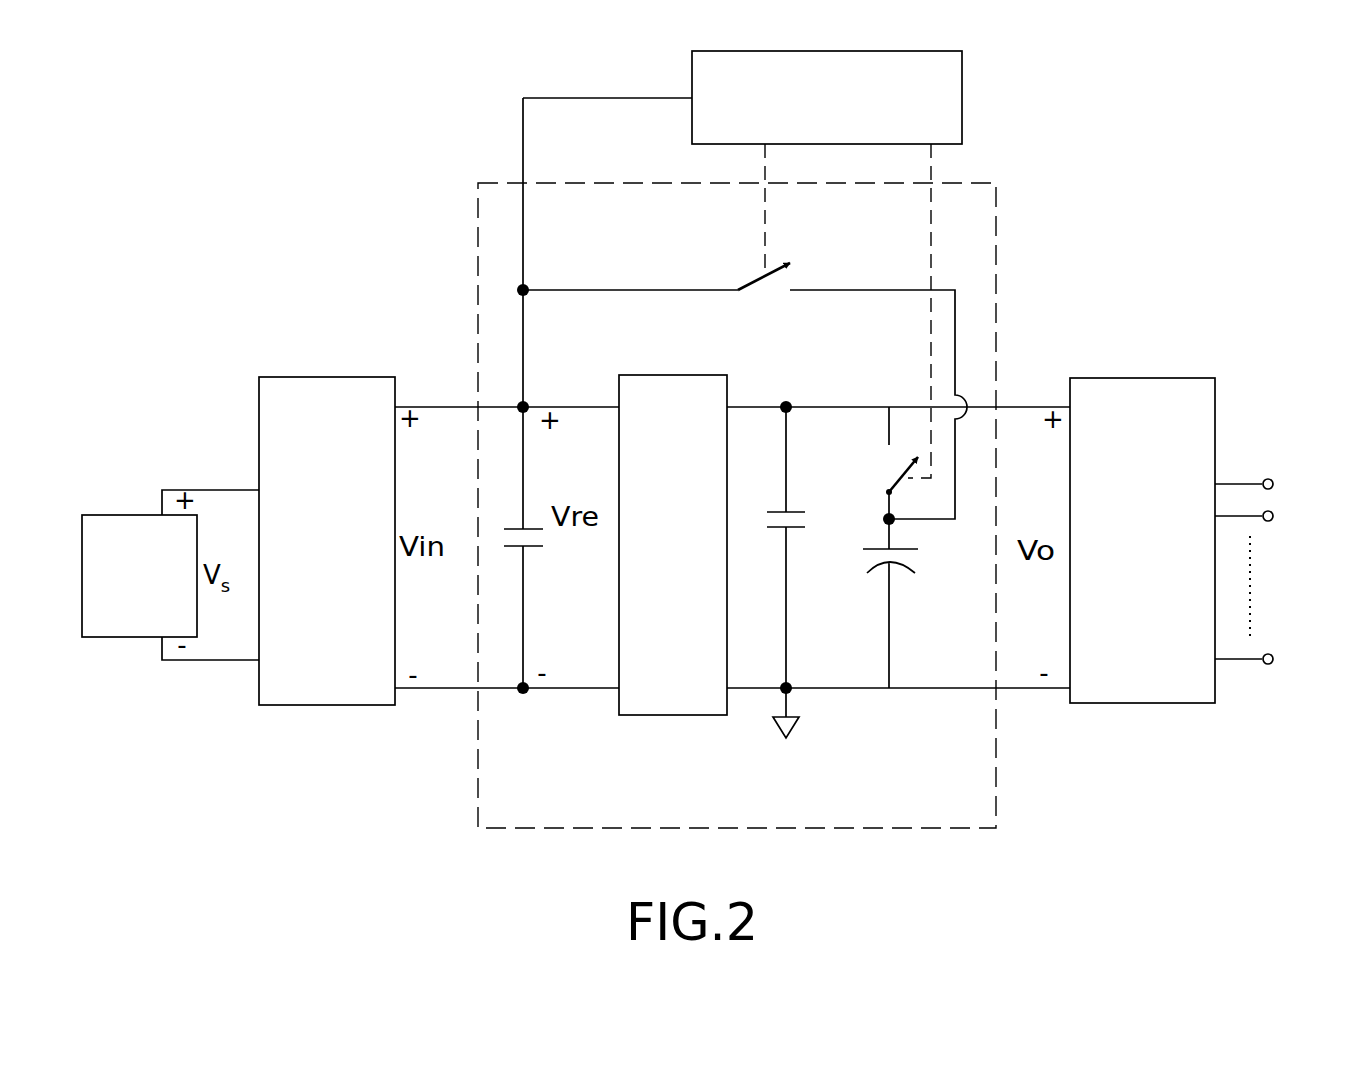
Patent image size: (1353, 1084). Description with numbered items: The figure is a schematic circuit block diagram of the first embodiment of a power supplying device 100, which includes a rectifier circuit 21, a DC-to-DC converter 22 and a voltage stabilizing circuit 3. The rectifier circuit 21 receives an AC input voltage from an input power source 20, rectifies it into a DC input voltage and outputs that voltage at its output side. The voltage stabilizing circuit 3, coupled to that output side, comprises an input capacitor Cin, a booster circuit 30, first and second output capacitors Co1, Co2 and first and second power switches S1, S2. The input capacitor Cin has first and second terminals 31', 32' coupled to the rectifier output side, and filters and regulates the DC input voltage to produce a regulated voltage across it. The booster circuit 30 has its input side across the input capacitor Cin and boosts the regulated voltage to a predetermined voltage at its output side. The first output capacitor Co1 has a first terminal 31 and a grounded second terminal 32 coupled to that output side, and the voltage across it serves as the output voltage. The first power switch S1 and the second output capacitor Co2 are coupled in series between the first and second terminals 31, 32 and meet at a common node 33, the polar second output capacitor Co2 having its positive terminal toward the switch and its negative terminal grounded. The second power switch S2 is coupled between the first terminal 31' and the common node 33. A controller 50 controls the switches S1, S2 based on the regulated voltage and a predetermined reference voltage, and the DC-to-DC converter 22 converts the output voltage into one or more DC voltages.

The power supplying device 100 is at (1139, 281).
The voltage stabilizing circuit 3 is at (999, 210).
The controller 50 is at (843, 133).
The input power source 20 is at (145, 515).
The rectifier circuit 21 is at (308, 377).
The DC-to-DC converter 22 is at (1162, 377).
The booster circuit 30 is at (675, 375).
The first terminal of the first output capacitor 31 is at (815, 387).
The first terminal of the input capacitor 31' is at (560, 383).
The second terminal of the first output capacitor 32 is at (812, 692).
The second terminal of the input capacitor 32' is at (556, 715).
The common node 33 is at (893, 522).
The first power switch S1 is at (902, 468).
The second power switch S2 is at (753, 277).
The input capacitor Cin is at (533, 552).
The first output capacitor Co1 is at (777, 530).
The second output capacitor Co2 is at (903, 574).